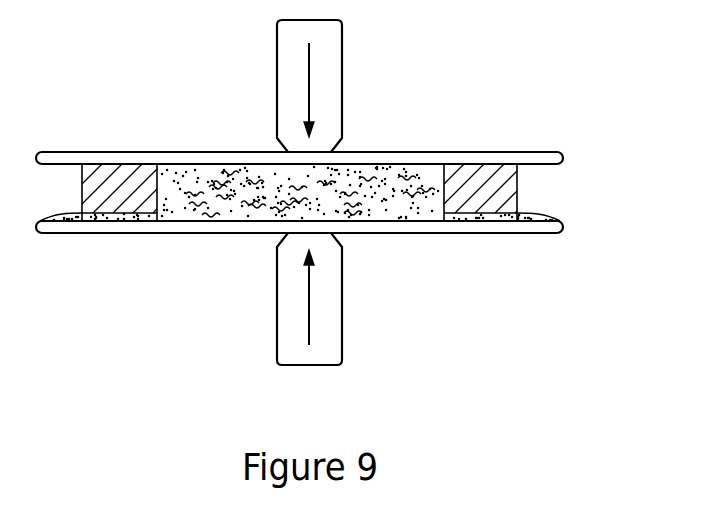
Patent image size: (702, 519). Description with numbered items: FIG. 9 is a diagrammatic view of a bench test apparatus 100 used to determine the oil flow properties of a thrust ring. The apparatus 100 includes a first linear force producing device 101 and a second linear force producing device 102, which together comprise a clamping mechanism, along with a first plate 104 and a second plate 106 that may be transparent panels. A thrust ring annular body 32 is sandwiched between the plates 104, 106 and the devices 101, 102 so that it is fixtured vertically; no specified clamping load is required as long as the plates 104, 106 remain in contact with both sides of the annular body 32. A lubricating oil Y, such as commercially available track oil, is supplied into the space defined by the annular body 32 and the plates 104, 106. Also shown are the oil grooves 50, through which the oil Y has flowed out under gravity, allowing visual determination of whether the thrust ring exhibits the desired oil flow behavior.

The bench test apparatus 100 is at (219, 336).
The first linear force producing device 101 is at (336, 34).
The second linear force producing device 102 is at (336, 340).
The first plate 104 is at (500, 158).
The second plate 106 is at (428, 234).
The annular body 32 is at (512, 172).
The oil grooves 50 is at (92, 213).
The lubricating oil Y is at (395, 175).